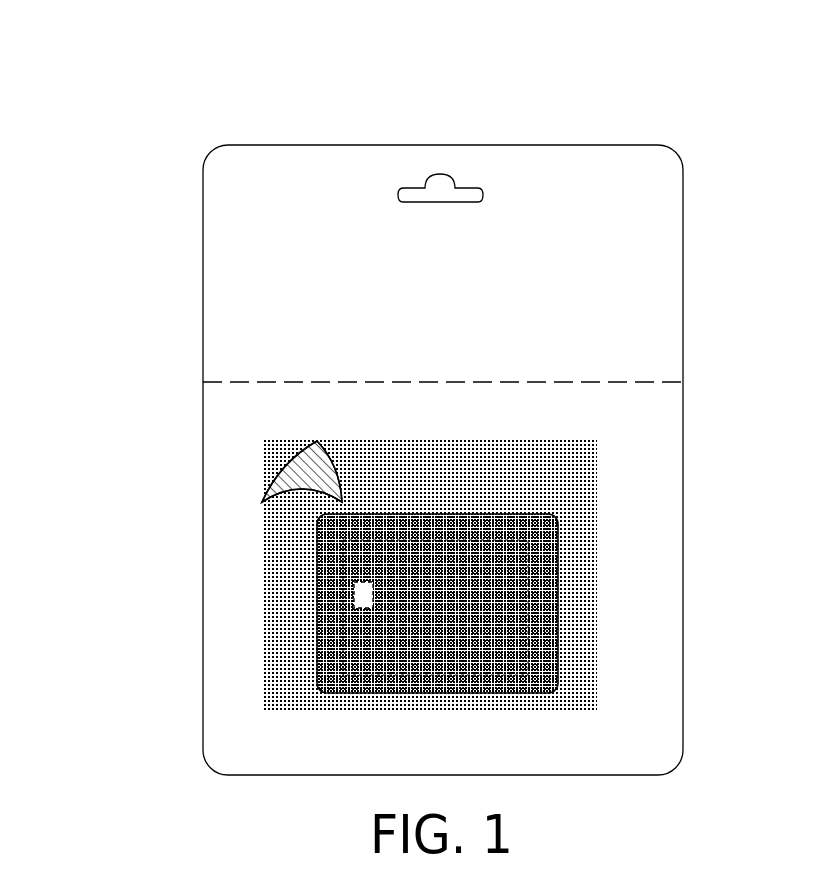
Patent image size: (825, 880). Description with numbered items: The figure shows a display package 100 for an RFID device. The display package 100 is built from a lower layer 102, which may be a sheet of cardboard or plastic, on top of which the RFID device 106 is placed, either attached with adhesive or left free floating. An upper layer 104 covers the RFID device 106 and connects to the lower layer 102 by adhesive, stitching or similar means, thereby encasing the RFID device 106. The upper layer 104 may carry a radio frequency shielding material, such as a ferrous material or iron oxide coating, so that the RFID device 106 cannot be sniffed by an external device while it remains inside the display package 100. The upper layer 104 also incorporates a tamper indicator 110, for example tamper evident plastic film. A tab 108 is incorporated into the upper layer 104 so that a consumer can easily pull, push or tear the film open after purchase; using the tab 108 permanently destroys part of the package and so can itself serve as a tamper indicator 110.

The display package 100 is at (238, 105).
The lower layer 102 is at (663, 408).
The upper layer 104 is at (597, 497).
The RFID device 106 is at (557, 590).
The tab 108 is at (272, 475).
The tamper indicator 110 is at (298, 450).